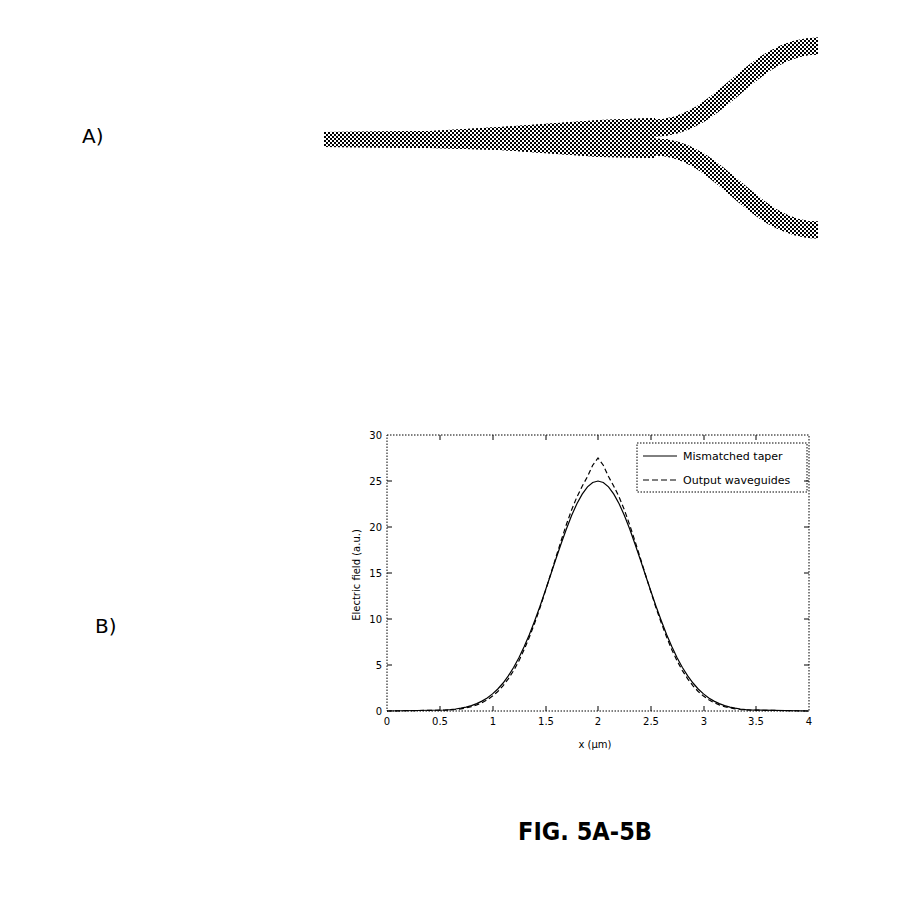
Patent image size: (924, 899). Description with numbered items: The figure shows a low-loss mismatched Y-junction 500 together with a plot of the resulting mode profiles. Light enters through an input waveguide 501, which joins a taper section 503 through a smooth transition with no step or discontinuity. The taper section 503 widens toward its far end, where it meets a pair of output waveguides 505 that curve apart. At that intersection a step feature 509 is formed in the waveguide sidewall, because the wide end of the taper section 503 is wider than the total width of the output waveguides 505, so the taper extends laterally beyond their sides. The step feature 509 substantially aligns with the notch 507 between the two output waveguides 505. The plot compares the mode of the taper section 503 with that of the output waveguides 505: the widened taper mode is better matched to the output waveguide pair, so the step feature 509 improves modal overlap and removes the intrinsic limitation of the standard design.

The low-loss mismatched Y-junction 500 is at (266, 106).
The input waveguide 501 is at (377, 149).
The taper section 503 is at (541, 157).
The output waveguides 505 is at (829, 52).
The notch 507 is at (641, 133).
The step feature 509 is at (646, 165).